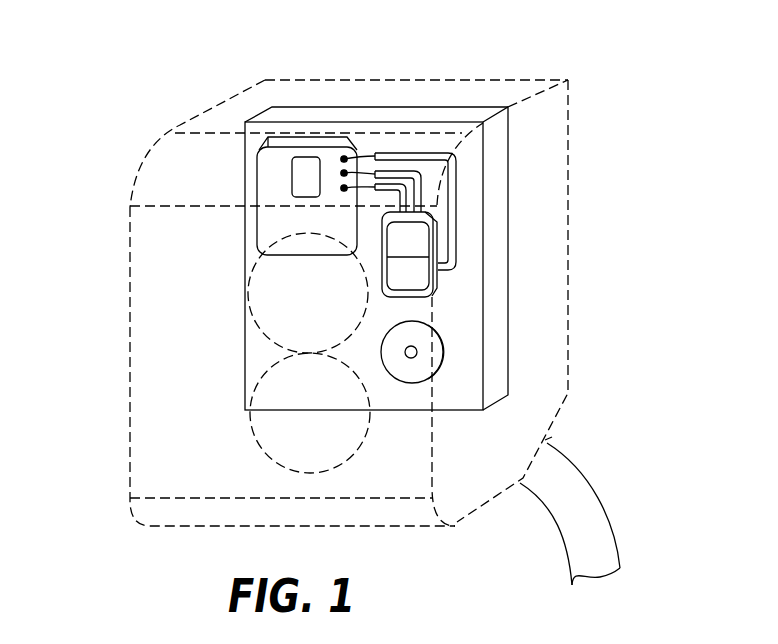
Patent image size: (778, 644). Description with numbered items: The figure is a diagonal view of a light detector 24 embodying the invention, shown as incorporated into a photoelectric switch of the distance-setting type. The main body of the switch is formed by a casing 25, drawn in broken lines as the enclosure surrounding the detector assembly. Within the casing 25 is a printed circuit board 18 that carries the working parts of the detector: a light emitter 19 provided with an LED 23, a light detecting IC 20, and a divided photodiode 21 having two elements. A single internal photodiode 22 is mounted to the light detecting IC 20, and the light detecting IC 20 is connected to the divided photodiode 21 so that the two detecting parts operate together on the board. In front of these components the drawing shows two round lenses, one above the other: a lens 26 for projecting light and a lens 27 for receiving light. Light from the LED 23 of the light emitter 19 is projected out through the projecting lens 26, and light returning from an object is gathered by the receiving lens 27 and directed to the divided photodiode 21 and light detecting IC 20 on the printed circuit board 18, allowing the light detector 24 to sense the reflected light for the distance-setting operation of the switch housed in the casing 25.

The printed circuit board 18 is at (492, 175).
The light emitter 19 is at (441, 338).
The light detecting IC 20 is at (310, 131).
The divided photodiode 21 is at (447, 250).
The internal photodiode 22 is at (292, 172).
The LED 23 is at (417, 352).
The light detector 24 is at (390, 104).
The casing 25 is at (477, 80).
The lens for projecting light 26 is at (252, 432).
The lens for receiving light 27 is at (251, 312).